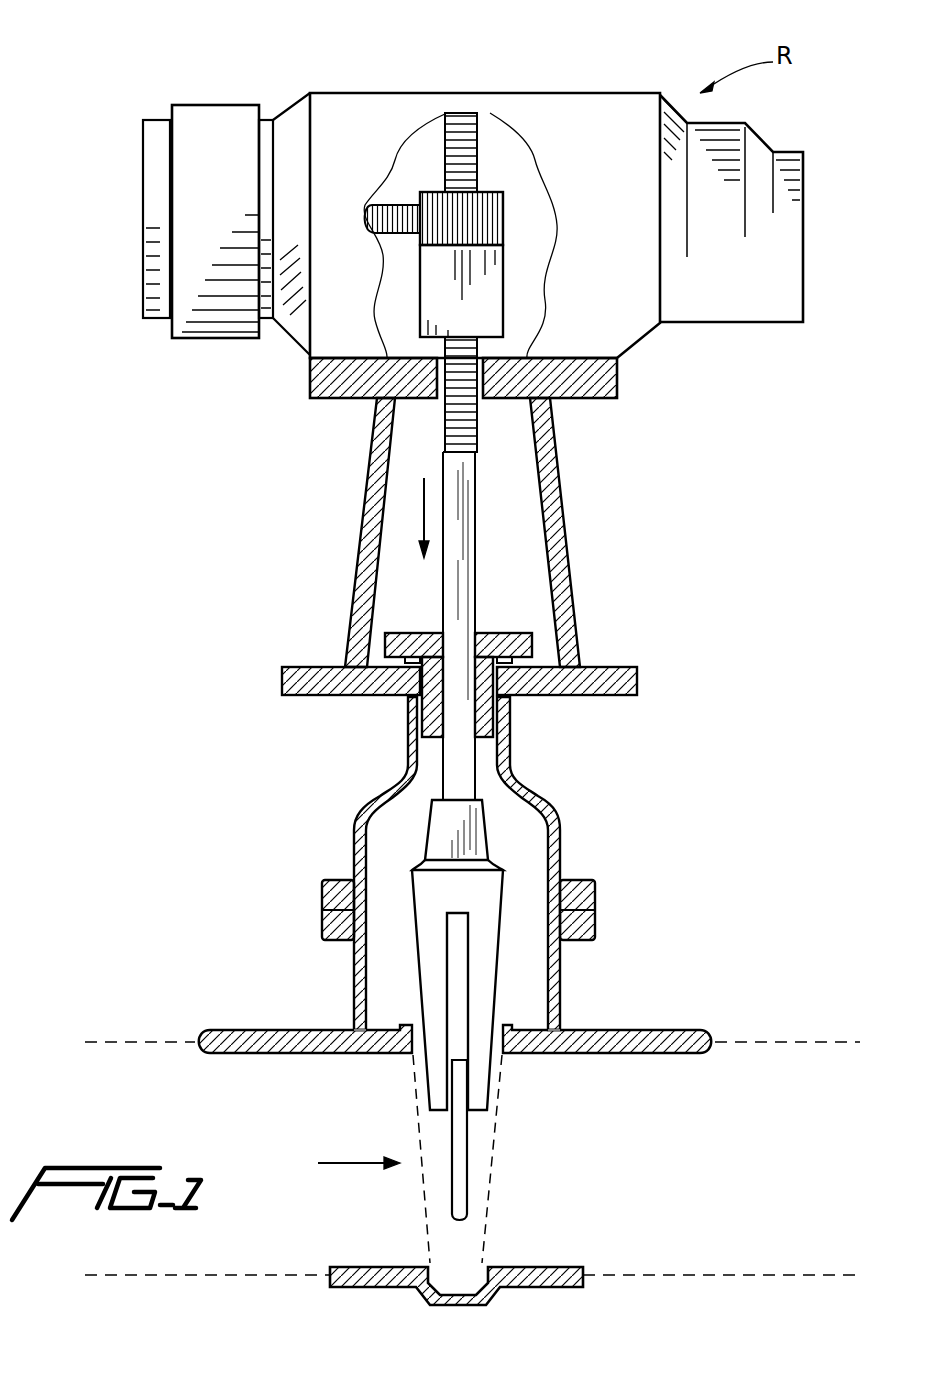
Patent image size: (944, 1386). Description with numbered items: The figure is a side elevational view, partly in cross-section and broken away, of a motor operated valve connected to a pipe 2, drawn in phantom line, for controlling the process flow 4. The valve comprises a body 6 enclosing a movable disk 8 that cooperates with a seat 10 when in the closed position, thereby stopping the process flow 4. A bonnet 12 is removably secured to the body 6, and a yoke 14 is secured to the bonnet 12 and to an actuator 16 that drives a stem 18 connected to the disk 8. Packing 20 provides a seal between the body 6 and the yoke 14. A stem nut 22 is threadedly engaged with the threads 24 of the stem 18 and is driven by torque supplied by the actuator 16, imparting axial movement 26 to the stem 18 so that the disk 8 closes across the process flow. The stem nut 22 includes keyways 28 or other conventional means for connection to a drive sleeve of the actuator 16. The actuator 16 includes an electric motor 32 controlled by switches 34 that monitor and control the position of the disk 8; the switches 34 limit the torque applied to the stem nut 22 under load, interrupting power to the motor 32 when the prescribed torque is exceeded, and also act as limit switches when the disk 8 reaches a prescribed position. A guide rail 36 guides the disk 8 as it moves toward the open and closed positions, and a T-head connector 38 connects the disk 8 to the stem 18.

The pipe 2 is at (786, 1040).
The process flow 4 is at (347, 1163).
The body 6 is at (561, 1001).
The movable disk 8 is at (430, 993).
The seat 10 is at (493, 1148).
The bonnet 12 is at (561, 829).
The yoke 14 is at (578, 604).
The actuator 16 is at (532, 94).
The stem 18 is at (442, 585).
The packing 20 is at (487, 708).
The stem nut 22 is at (490, 285).
The threads 24 is at (477, 428).
The axial movement 26 is at (423, 516).
The keyways 28 is at (500, 203).
The electric motor 32 is at (200, 118).
The switches 34 is at (768, 141).
The guide rail 36 is at (462, 1210).
The T-head connector 38 is at (440, 834).